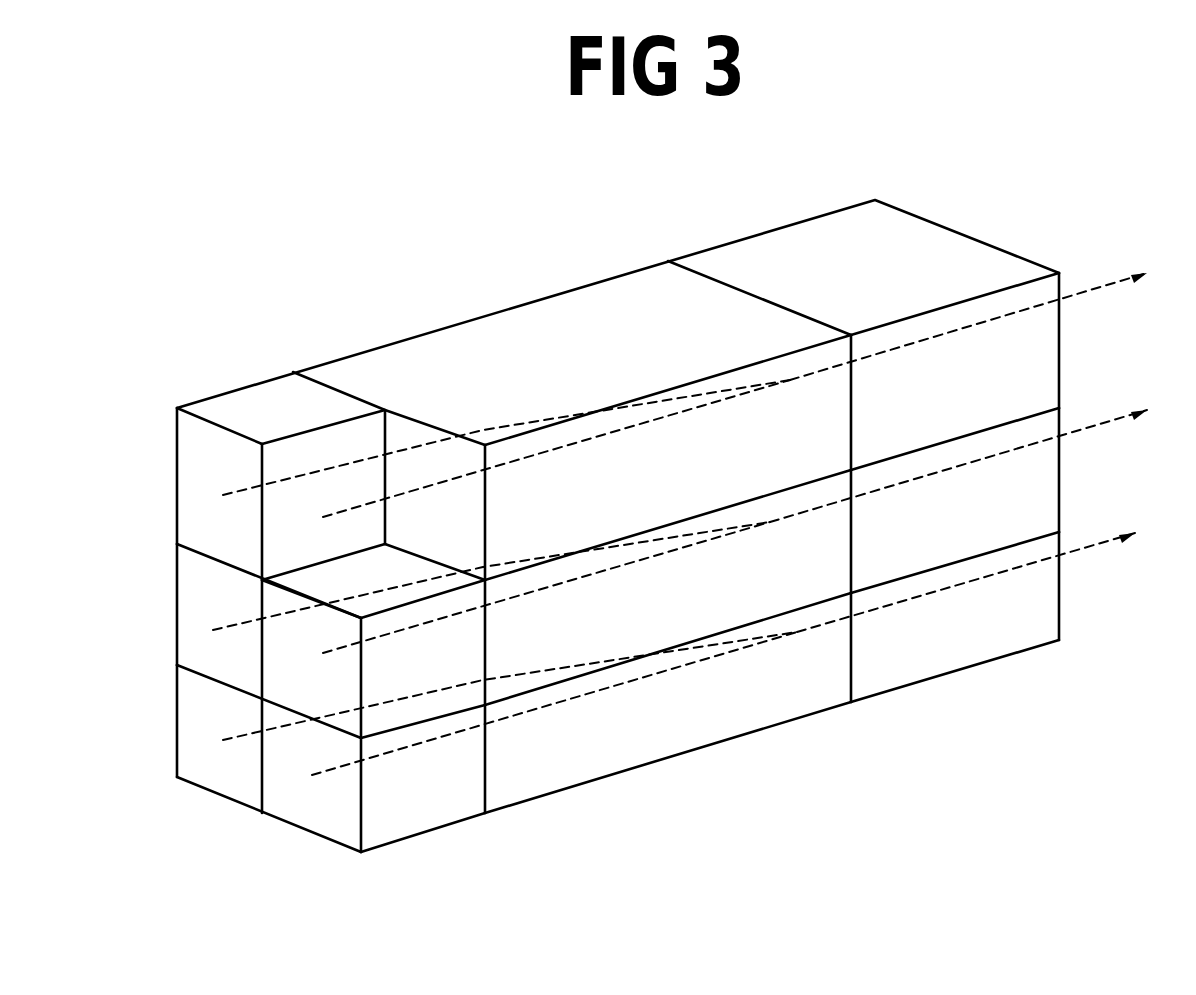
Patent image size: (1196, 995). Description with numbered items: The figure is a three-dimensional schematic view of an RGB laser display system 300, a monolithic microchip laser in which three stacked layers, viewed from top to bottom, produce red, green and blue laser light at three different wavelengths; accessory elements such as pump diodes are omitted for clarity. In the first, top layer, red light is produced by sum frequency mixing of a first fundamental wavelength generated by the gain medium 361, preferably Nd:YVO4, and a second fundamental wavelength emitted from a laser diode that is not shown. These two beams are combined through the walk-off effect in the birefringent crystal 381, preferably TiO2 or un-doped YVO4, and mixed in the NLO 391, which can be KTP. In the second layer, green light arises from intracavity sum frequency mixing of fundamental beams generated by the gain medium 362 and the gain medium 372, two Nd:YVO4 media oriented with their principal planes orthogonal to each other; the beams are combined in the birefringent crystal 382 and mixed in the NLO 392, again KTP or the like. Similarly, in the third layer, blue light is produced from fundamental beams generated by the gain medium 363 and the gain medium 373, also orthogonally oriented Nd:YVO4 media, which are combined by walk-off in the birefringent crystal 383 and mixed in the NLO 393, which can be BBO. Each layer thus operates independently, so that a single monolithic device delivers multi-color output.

The RGB laser display system 300 is at (675, 514).
The gain medium 361 is at (281, 513).
The gain medium 362 is at (269, 641).
The gain medium 363 is at (269, 758).
The gain medium 372 is at (373, 641).
The gain medium 373 is at (423, 778).
The birefringent crystal 381 is at (668, 457).
The birefringent crystal 382 is at (668, 636).
The birefringent crystal 383 is at (668, 752).
The NLO 391 is at (863, 365).
The NLO 392 is at (955, 500).
The NLO 393 is at (955, 617).